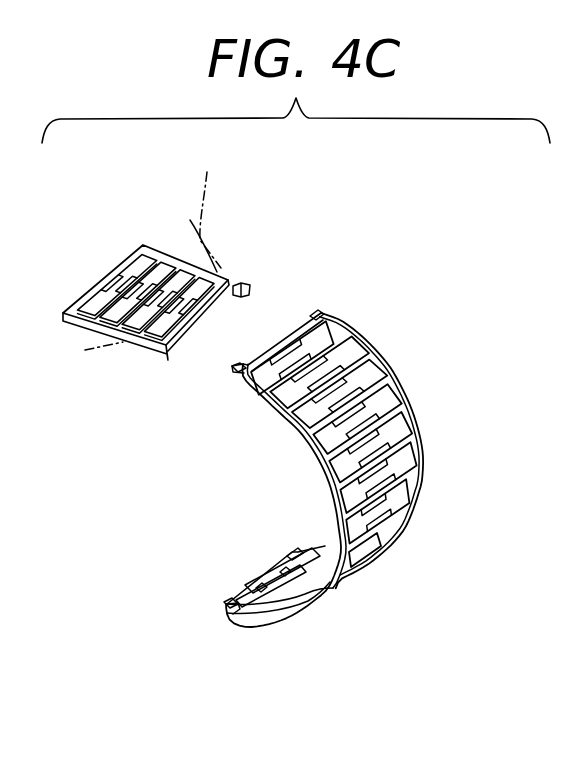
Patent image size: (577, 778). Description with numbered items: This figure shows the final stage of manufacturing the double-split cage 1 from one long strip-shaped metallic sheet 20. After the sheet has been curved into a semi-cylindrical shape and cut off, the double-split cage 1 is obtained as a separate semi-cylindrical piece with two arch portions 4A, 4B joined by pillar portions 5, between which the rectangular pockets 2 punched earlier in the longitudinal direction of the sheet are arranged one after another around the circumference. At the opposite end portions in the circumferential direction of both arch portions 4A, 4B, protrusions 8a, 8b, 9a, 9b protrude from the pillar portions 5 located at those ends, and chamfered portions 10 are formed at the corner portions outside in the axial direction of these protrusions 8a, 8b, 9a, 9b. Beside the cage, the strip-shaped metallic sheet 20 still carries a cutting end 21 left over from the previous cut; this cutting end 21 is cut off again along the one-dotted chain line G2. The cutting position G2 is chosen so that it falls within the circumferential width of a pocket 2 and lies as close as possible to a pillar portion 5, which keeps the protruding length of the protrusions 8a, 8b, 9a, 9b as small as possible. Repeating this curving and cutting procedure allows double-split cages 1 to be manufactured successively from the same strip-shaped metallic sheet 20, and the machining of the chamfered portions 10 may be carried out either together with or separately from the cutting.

The double-split cage 1 is at (338, 447).
The rectangular pocket 2 is at (397, 417).
The arch portion 4A is at (413, 438).
The arch portion 4B is at (333, 463).
The pillar portion 5 is at (357, 402).
The protrusion 8a is at (310, 309).
The protrusion 8b is at (239, 367).
The protrusion 9a is at (290, 548).
The protrusion 9b is at (223, 603).
The chamfered portion 10 is at (253, 447).
The strip-shaped metallic sheet 20 is at (181, 251).
The cutting end 21 is at (243, 282).
The cutting position (one-dotted chain line) G2 is at (206, 207).